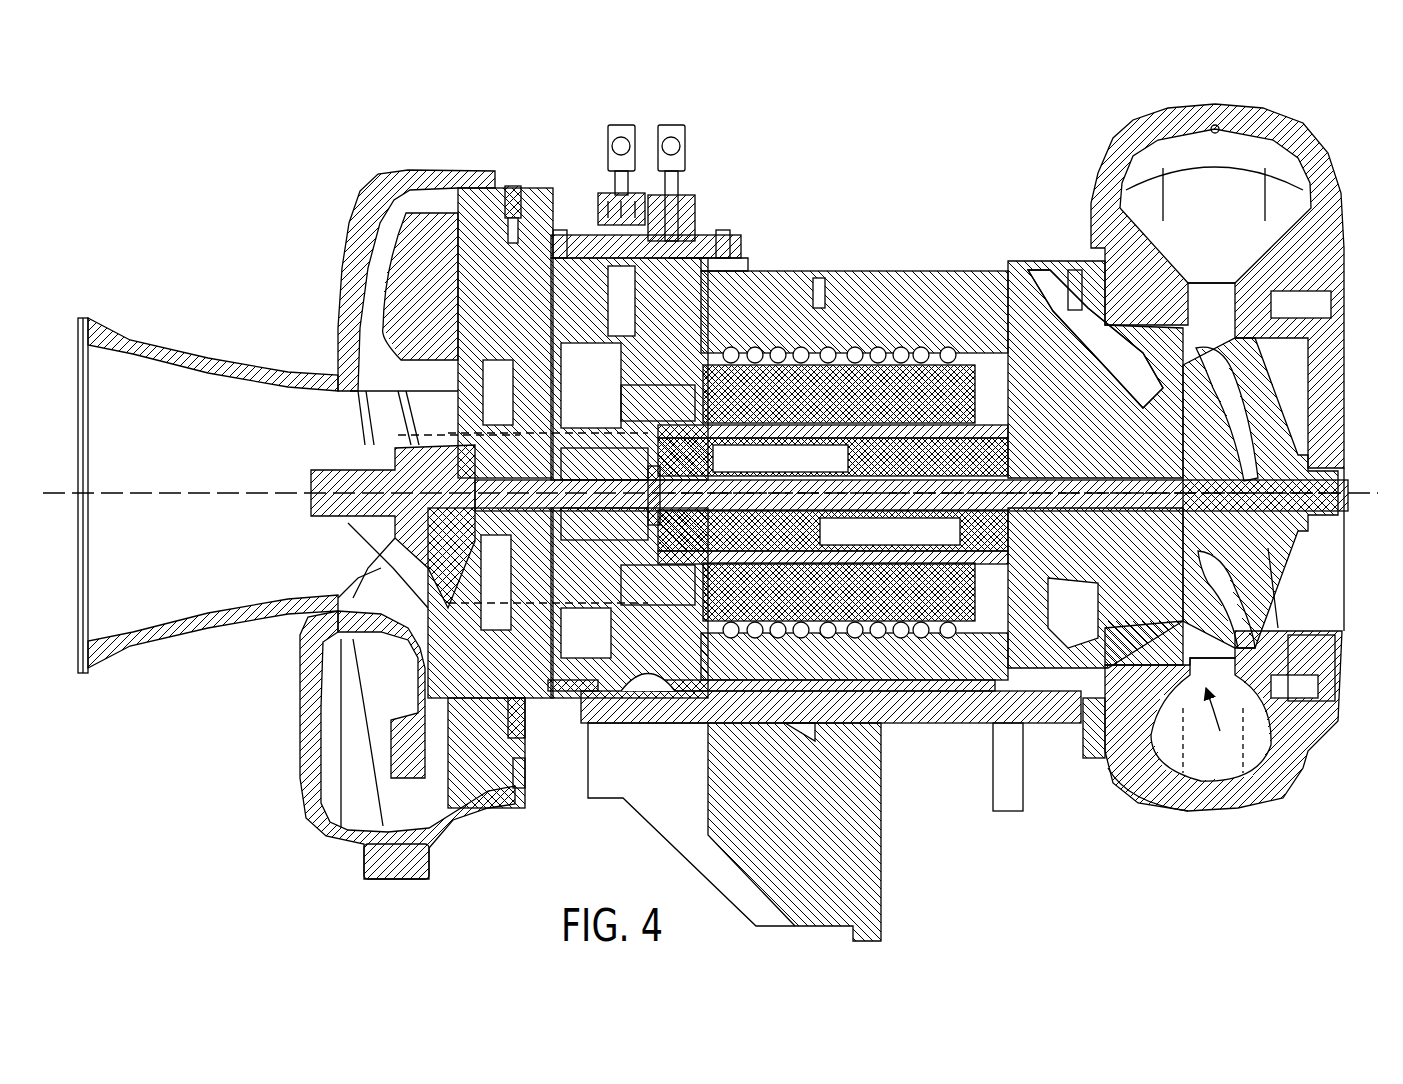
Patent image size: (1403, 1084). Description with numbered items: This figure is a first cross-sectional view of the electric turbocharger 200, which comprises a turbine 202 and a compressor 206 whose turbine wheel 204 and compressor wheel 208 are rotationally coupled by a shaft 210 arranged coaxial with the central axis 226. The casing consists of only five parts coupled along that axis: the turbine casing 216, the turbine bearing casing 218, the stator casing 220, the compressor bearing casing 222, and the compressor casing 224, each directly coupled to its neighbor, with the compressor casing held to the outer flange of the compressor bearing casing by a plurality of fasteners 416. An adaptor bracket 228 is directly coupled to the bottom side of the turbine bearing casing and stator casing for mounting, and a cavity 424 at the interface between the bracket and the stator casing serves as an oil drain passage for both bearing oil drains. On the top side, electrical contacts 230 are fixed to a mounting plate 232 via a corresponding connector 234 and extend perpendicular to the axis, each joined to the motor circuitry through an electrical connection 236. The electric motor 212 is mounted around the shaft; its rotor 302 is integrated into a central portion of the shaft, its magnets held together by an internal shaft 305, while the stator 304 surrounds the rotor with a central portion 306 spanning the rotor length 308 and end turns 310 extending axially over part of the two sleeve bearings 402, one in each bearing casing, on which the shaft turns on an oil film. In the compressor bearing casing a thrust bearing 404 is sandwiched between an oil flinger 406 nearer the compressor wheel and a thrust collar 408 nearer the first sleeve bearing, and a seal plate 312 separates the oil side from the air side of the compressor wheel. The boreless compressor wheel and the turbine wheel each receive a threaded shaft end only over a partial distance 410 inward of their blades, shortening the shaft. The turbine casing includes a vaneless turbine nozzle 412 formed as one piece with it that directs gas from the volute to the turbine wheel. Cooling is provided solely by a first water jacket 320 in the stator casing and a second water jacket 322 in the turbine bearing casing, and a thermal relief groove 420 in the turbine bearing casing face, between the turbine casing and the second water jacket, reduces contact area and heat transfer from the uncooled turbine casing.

The turbocharger 200 is at (1312, 118).
The turbine 202 is at (1338, 256).
The turbine wheel 204 is at (1293, 453).
The compressor 206 is at (276, 282).
The compressor wheel 208 is at (303, 467).
The shaft 210 is at (1090, 745).
The electric motor 212 is at (930, 345).
The turbine casing 216 is at (1228, 798).
The turbine bearing casing 218 is at (998, 251).
The stator casing 220 is at (847, 655).
The compressor bearing casing 222 is at (500, 797).
The compressor casing 224 is at (360, 813).
The central axis 226 is at (1362, 477).
The adaptor bracket 228 is at (700, 823).
The electrical contacts 230 is at (668, 154).
The mounting plate 232 is at (733, 236).
The connector 234 is at (687, 202).
The electrical connection 236 is at (743, 266).
The rotor 302 is at (885, 644).
The stator 304 is at (897, 357).
The internal shaft 305 is at (724, 480).
The central portion 306 is at (877, 596).
The length 308 is at (745, 520).
The end turns 310 is at (633, 367).
The seal plate 312 is at (434, 667).
The first water jacket 320 is at (845, 363).
The second water jacket 322 is at (1065, 300).
The sleeve bearings 402 is at (393, 437).
The thrust bearing 404 is at (373, 560).
The oil flinger 406 is at (377, 543).
The thrust collar 408 is at (548, 683).
The distance 410 is at (373, 530).
The vaneless turbine nozzle 412 is at (1218, 726).
The fasteners 416 is at (505, 176).
The thermal relief groove 420 is at (1066, 260).
The cavity 424 is at (724, 687).